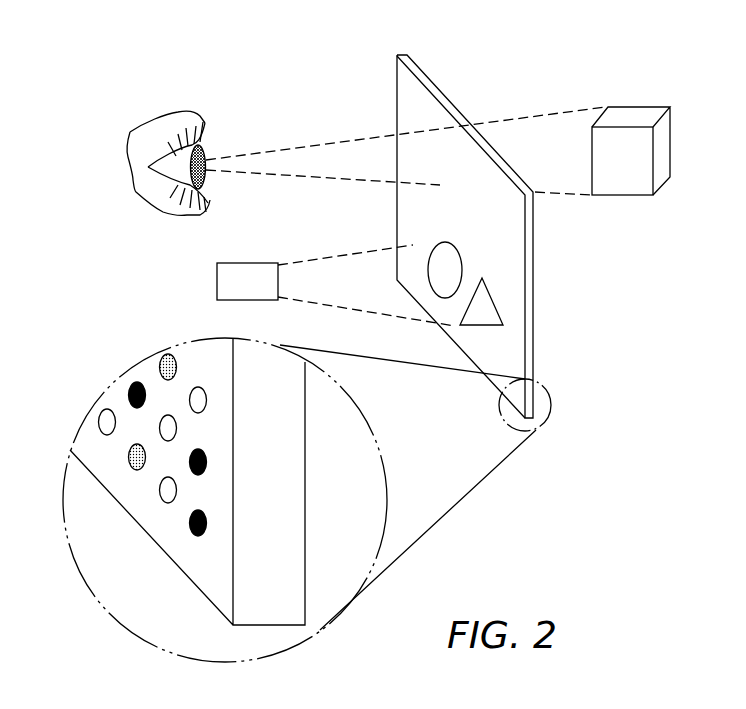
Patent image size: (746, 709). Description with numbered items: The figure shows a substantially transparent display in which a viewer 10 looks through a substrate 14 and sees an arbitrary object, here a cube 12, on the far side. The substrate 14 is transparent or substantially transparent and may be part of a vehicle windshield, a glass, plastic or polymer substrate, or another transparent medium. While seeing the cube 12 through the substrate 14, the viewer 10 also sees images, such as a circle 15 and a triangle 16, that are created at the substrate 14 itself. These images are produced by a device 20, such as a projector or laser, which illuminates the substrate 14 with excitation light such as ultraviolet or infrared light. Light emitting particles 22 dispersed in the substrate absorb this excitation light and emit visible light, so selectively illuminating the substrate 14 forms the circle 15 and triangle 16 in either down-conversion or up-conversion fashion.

The viewer 10 is at (207, 152).
The cube 12 is at (633, 114).
The substrate 14 is at (457, 110).
The circle 15 is at (432, 268).
The triangle 16 is at (472, 311).
The device 20 is at (248, 263).
The light emitting particles 22 is at (160, 368).